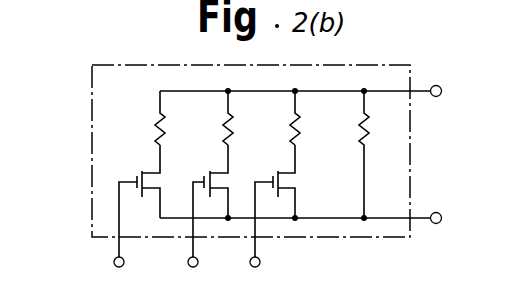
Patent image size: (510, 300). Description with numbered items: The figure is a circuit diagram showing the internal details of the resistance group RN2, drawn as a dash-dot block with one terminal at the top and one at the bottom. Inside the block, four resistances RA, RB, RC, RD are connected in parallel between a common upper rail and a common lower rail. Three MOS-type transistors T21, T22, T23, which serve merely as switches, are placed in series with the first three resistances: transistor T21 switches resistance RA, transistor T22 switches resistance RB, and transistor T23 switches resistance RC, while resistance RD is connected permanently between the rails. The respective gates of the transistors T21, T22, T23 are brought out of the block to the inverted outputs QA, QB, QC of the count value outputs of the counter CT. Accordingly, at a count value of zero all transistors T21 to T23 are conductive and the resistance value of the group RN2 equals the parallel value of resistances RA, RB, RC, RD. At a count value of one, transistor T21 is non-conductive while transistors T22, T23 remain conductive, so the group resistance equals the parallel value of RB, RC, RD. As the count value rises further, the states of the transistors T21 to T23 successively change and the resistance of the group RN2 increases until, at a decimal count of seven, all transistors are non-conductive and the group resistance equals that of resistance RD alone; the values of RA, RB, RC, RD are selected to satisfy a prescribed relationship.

The resistance group RN2 is at (92, 160).
The transistor T21 is at (142, 171).
The transistor T22 is at (208, 171).
The transistor T23 is at (277, 171).
The resistance RA is at (167, 132).
The resistance RB is at (235, 132).
The resistance RC is at (302, 130).
The resistance RD is at (370, 130).
The inverted output QA is at (128, 272).
The inverted output QB is at (202, 272).
The inverted output QC is at (264, 272).